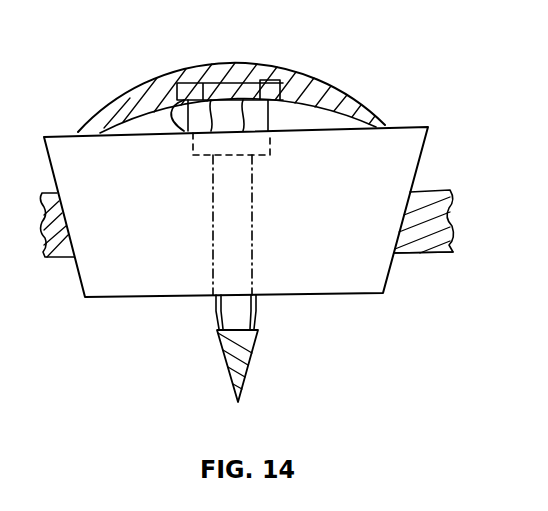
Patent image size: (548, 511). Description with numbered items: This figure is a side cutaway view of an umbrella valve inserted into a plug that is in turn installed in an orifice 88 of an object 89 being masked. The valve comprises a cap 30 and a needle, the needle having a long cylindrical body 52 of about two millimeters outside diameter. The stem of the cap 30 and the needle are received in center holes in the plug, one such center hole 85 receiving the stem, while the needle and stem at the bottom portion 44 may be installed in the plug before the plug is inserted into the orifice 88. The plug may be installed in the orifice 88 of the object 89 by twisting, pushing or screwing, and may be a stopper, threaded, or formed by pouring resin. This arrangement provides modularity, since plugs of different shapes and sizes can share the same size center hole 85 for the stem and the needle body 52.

The cap 30 is at (353, 92).
The bottom portion 44 is at (262, 114).
The center hole 85 is at (212, 148).
The orifice 88 is at (410, 198).
The object 89 is at (437, 253).
The cylindrical body 52 is at (258, 302).